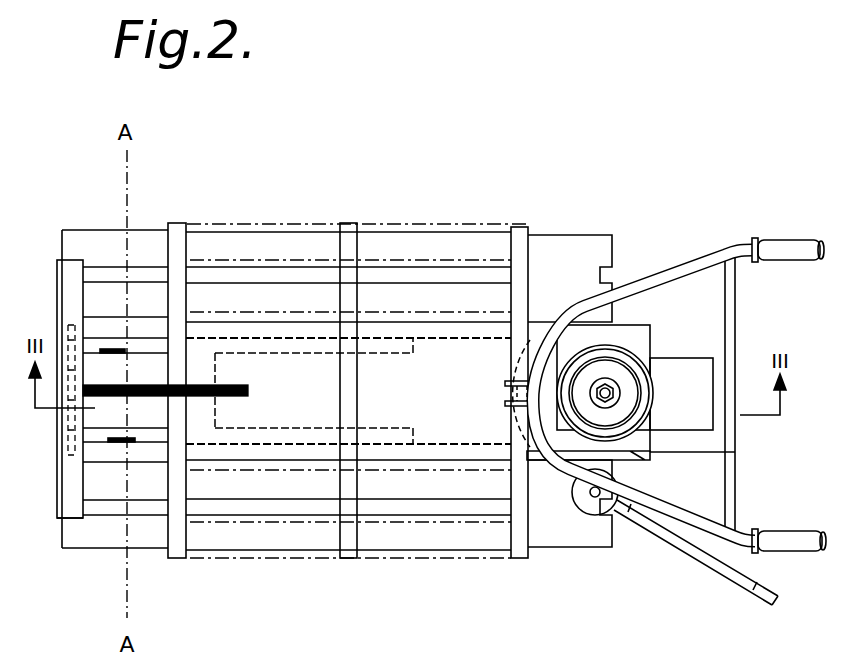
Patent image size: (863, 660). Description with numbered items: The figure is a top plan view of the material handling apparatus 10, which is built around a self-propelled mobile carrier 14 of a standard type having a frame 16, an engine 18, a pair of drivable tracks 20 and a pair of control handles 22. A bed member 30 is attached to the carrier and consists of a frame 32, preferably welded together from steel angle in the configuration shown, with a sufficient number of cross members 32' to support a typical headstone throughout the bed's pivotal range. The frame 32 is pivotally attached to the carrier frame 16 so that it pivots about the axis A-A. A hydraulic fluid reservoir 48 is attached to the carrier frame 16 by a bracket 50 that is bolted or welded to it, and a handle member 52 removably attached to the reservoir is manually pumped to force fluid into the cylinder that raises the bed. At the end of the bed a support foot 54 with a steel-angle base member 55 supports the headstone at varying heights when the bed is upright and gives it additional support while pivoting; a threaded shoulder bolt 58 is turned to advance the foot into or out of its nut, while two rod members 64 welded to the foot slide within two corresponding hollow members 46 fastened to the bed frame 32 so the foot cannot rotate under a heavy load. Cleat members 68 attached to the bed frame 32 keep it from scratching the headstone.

The material handling apparatus 10 is at (368, 565).
The self-propelled mobile carrier 14 is at (644, 464).
The frame 16 is at (635, 332).
The engine 18 is at (690, 404).
The drivable tracks 20 is at (600, 248).
The control handles 22 is at (790, 240).
The bed member 30 is at (524, 553).
The frame 32 is at (543, 371).
The cross members 32' is at (373, 370).
The hollow members 46 is at (384, 430).
The hydraulic fluid reservoir 48 is at (597, 505).
The bracket 50 is at (735, 451).
The handle member 52 is at (712, 573).
The support foot 54 is at (50, 266).
The base member 55 is at (72, 520).
The shoulder bolt 58 is at (250, 389).
The rod members 64 is at (112, 342).
The cleat members 68 is at (245, 222).